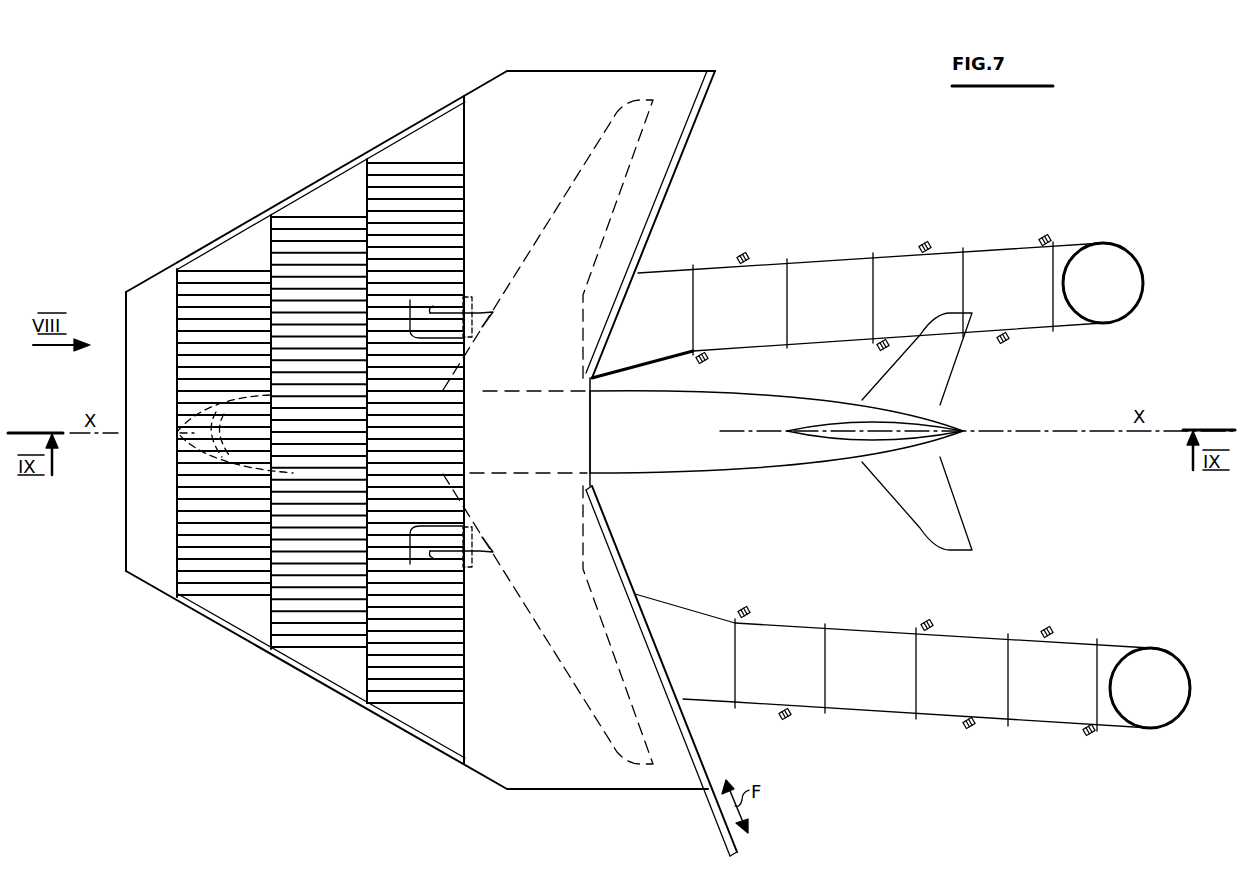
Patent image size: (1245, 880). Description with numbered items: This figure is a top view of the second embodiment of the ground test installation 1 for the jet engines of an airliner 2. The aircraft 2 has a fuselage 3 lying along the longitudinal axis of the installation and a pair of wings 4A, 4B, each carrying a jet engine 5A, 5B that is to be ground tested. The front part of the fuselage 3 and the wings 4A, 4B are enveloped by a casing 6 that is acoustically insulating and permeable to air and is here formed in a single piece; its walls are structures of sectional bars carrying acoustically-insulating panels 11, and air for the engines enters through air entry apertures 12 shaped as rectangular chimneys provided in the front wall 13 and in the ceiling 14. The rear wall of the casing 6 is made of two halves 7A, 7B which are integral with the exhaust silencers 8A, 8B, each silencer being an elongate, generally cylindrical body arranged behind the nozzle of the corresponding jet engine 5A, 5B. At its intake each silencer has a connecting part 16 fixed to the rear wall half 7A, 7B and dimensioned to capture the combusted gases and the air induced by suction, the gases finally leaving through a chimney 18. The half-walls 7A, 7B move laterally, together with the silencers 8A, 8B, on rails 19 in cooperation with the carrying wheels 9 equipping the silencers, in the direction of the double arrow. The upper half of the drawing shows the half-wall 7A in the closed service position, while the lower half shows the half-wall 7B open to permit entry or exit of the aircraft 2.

The ground test installation 1 is at (190, 206).
The airliner 2 is at (780, 385).
The fuselage 3 is at (519, 387).
The wing 4A is at (579, 176).
The wing 4B is at (574, 660).
The jet engine 5A is at (470, 297).
The jet engine 5B is at (470, 567).
The casing 6 is at (118, 499).
The rear wall half 7A is at (671, 183).
The rear wall half 7B is at (702, 743).
The exhaust silencer 8A is at (757, 277).
The exhaust silencer 8B is at (962, 649).
The carrying wheels 9 is at (927, 243).
The acoustically-insulating panels 11 is at (312, 190).
The air entry apertures 12 is at (323, 610).
The front wall 13 is at (125, 307).
The ceiling 14 is at (615, 87).
The connecting part 16 is at (663, 282).
The chimney 18 is at (1108, 261).
The rails 19 is at (615, 536).